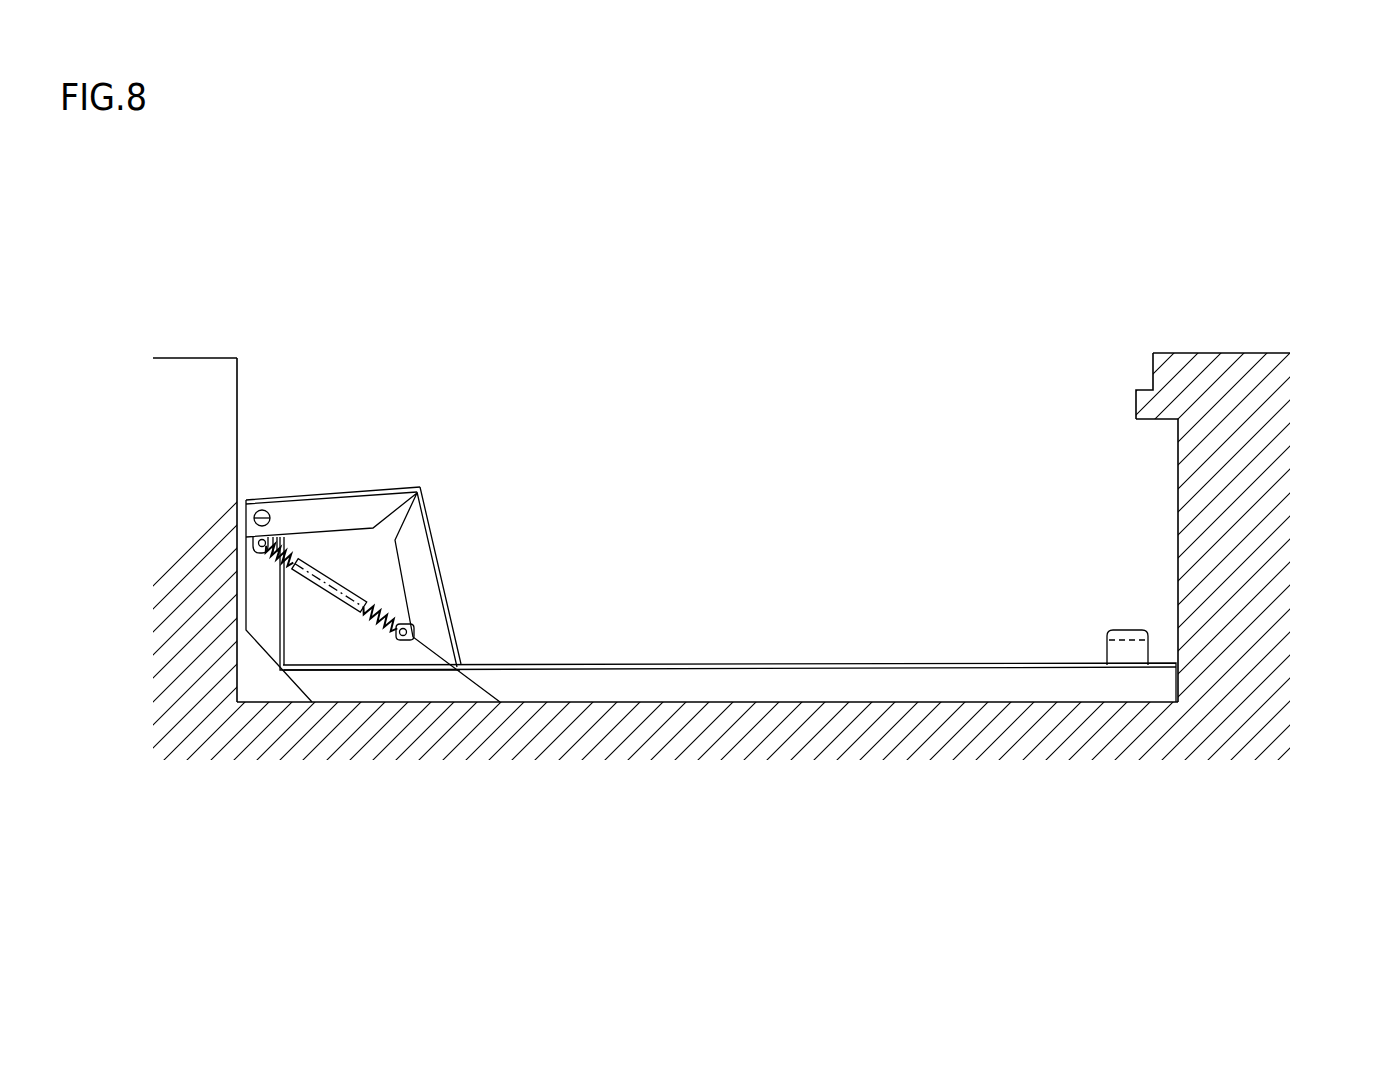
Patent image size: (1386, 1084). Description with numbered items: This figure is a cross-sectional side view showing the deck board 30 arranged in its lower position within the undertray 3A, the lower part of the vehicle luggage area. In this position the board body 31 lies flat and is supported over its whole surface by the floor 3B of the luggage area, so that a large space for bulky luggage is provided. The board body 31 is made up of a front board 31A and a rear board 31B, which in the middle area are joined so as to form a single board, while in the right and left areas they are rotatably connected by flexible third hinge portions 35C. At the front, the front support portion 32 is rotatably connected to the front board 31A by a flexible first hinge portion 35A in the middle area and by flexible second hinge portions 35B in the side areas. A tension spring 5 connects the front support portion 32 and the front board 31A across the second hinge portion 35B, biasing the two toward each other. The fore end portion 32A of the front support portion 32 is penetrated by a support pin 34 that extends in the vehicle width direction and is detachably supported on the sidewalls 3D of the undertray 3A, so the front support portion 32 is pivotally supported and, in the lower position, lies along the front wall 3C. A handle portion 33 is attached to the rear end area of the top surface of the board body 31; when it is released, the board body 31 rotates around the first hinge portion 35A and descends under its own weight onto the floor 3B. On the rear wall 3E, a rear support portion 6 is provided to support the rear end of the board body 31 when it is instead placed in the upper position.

The undertray 3A is at (838, 336).
The floor 3B is at (755, 702).
The front wall 3C is at (237, 382).
The sidewalls 3D is at (618, 625).
The rear wall 3E is at (1178, 530).
The tension spring 5 is at (285, 570).
The rear support portion 6 is at (1145, 408).
The deck board 30 is at (846, 643).
The board body 31 is at (918, 678).
The front board 31A is at (415, 568).
The rear board 31B is at (716, 682).
The front support portion 32 is at (262, 590).
The fore end portion 32A is at (243, 542).
The handle portion 33 is at (1127, 643).
The support pin 34 is at (252, 518).
The first hinge portion 35A is at (280, 672).
The second hinge portion 35B is at (420, 487).
The third hinge portion 35C is at (462, 660).